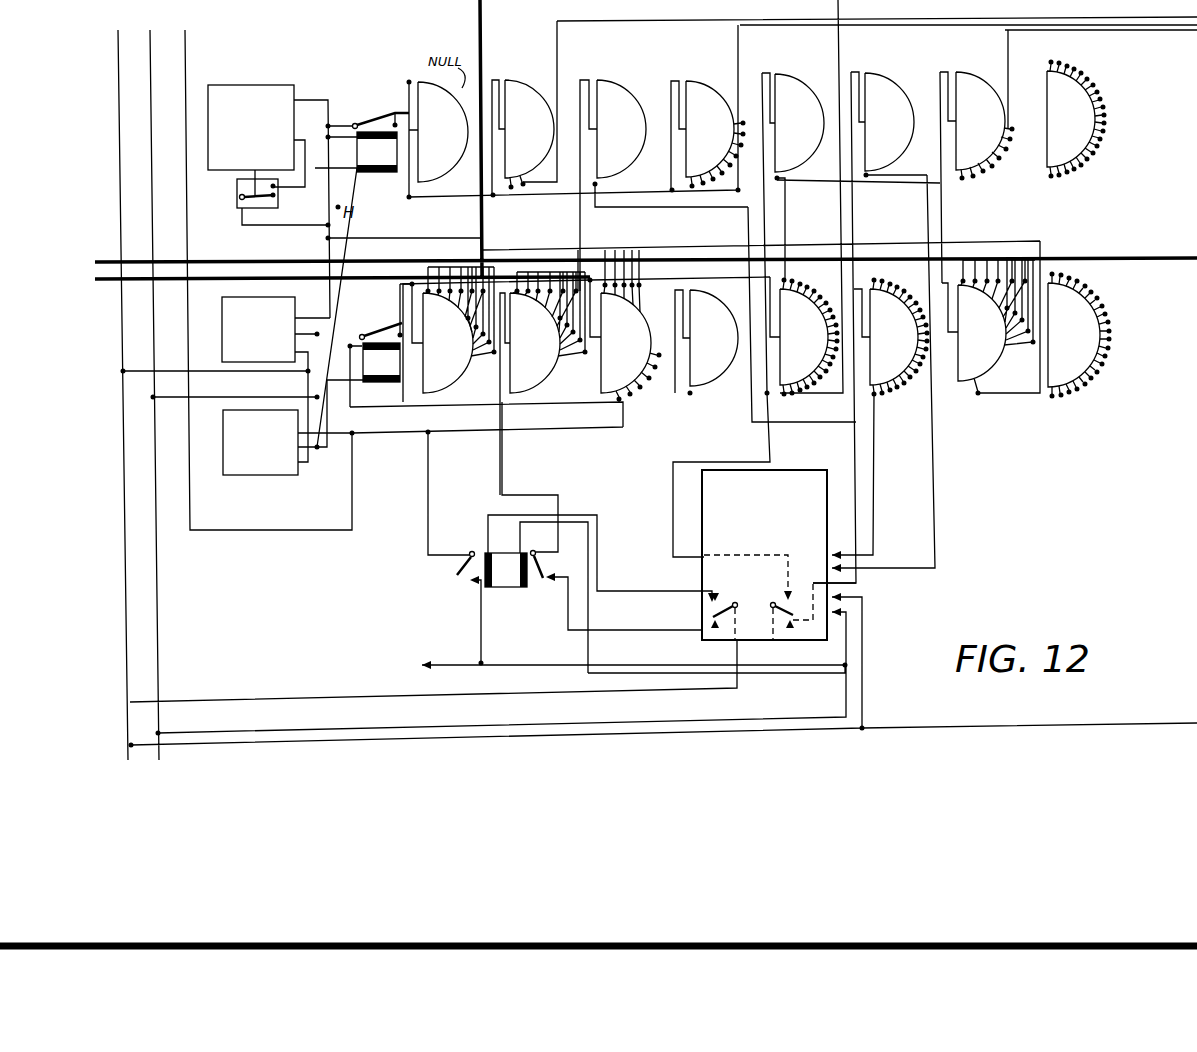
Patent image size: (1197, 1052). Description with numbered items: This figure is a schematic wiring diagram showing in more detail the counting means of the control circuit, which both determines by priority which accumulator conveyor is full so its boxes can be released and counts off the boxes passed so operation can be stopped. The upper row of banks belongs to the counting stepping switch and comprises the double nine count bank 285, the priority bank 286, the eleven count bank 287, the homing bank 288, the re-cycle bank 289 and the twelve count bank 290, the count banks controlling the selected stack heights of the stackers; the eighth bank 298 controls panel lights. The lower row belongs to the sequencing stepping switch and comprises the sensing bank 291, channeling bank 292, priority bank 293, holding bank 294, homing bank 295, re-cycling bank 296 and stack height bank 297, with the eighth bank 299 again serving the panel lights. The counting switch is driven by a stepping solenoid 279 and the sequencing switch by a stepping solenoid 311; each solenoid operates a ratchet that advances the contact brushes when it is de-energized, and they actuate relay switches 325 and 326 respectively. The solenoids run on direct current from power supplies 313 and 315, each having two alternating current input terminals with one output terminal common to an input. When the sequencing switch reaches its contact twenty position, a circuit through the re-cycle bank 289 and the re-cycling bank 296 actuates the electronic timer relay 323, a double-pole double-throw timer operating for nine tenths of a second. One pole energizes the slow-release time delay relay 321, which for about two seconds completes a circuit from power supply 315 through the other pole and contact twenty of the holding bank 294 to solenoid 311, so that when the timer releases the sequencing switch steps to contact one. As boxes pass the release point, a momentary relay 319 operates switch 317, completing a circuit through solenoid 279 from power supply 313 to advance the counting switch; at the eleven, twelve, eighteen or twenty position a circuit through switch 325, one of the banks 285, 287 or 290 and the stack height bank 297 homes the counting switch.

The stepping solenoid 279 is at (390, 162).
The double nine count bank 285 is at (535, 88).
The priority bank 286 is at (635, 88).
The eleven count bank 287 is at (718, 86).
The homing bank 288 is at (808, 84).
The re-cycle bank 289 is at (894, 84).
The twelve count bank 290 is at (980, 84).
The sensing bank 291 is at (437, 377).
The channeling bank 292 is at (532, 377).
The priority bank 293 is at (640, 298).
The holding bank 294 is at (692, 398).
The homing bank 295 is at (808, 290).
The re-cycling bank 296 is at (880, 390).
The stack height bank 297 is at (968, 390).
The eighth bank 298 is at (1095, 84).
The eighth bank 299 is at (1090, 318).
The stepping solenoid 311 is at (392, 372).
The power supply 313 is at (222, 310).
The power supply 315 is at (262, 476).
The switch 317 is at (237, 189).
The relay 319 is at (258, 85).
The time delay relay 321 is at (516, 576).
The electronic timer relay 323 is at (790, 472).
The relay switch 325 is at (362, 112).
The relay switch 326 is at (362, 332).